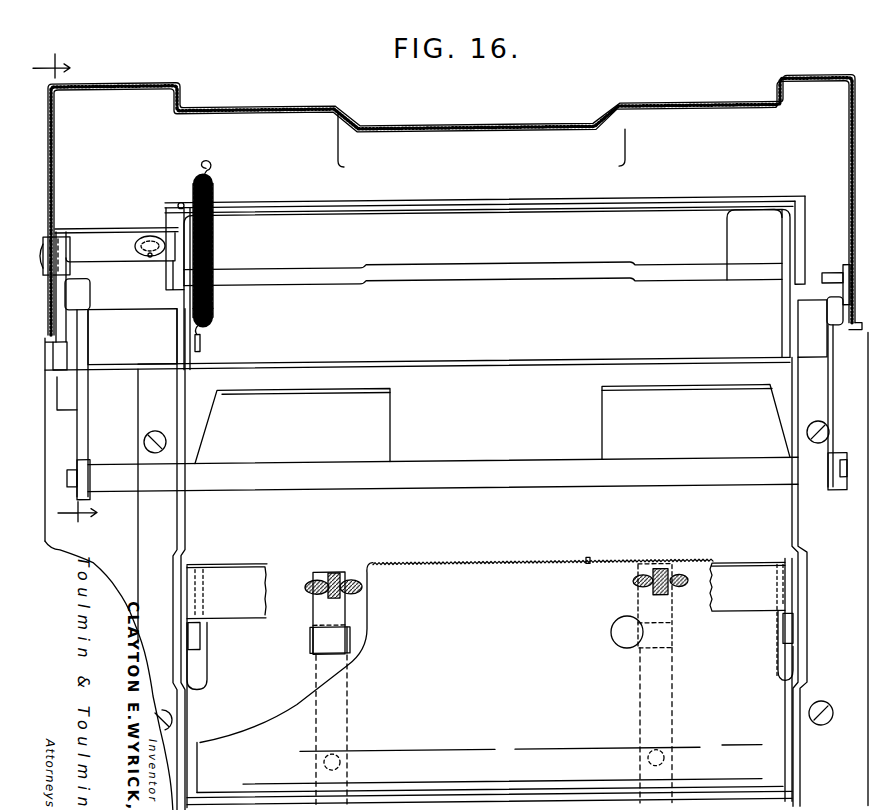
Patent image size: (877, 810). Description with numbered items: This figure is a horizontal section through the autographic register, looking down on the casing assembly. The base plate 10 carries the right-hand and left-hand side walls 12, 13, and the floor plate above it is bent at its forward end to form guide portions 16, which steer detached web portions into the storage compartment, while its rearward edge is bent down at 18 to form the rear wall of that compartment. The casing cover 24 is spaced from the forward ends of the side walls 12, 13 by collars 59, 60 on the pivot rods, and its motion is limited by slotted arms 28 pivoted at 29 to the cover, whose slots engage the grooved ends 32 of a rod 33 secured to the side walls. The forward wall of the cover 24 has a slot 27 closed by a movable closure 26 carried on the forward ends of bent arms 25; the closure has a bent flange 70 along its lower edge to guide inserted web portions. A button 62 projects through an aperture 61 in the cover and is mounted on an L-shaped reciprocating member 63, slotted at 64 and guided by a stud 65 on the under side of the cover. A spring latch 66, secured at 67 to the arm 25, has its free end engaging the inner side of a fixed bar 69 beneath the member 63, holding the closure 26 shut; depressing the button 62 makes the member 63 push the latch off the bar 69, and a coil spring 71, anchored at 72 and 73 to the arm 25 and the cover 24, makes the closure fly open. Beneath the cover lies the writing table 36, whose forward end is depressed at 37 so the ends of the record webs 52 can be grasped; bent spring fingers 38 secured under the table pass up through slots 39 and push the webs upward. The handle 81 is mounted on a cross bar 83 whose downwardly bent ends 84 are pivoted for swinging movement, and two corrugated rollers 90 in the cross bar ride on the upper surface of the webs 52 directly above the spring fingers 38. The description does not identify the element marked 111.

The base plate 10 is at (53, 490).
The right-hand side wall 12 is at (798, 518).
The left-hand side wall 13 is at (177, 530).
The bent guide portions of floor plate 16 is at (380, 416).
The downwardly bent rearward edge of floor plate 18 is at (64, 288).
The casing cover 24 is at (501, 169).
The bent arm 25 is at (184, 298).
The movable closure 26 is at (428, 245).
The slot in forward wall of casing cover 27 is at (805, 221).
The slotted arm 28 is at (88, 350).
The pivot of slotted arm 29 is at (90, 294).
The grooved end of rod 32 is at (70, 465).
The rod 33 is at (489, 461).
The writing table 36 is at (267, 687).
The depressed forward portion of writing table 37 is at (366, 566).
The bent spring finger 38 is at (313, 613).
The slot in writing table 39 is at (311, 641).
The record web 52 is at (493, 583).
The collar 59 is at (512, 364).
The collar 60 is at (128, 355).
The aperture in cover 61 is at (55, 227).
The button 62 is at (48, 236).
The L-shaped reciprocating member 63 is at (92, 236).
The slot in reciprocating member 64 is at (135, 246).
The stud 65 is at (149, 254).
The spring latch 66 is at (180, 200).
The securing point of spring latch 67 is at (213, 249).
The fixed bar 69 is at (67, 225).
The bent flange of closure 70 is at (334, 267).
The coil spring 71 is at (214, 300).
The spring anchor on arm 72 is at (202, 340).
The spring anchor on cover 73 is at (209, 165).
The handle 81 is at (249, 564).
The cross bar 83 is at (258, 607).
The downwardly bent end of cross bar 84 is at (200, 638).
The corrugated roller 90 is at (339, 572).
The stop lug 111 is at (588, 562).